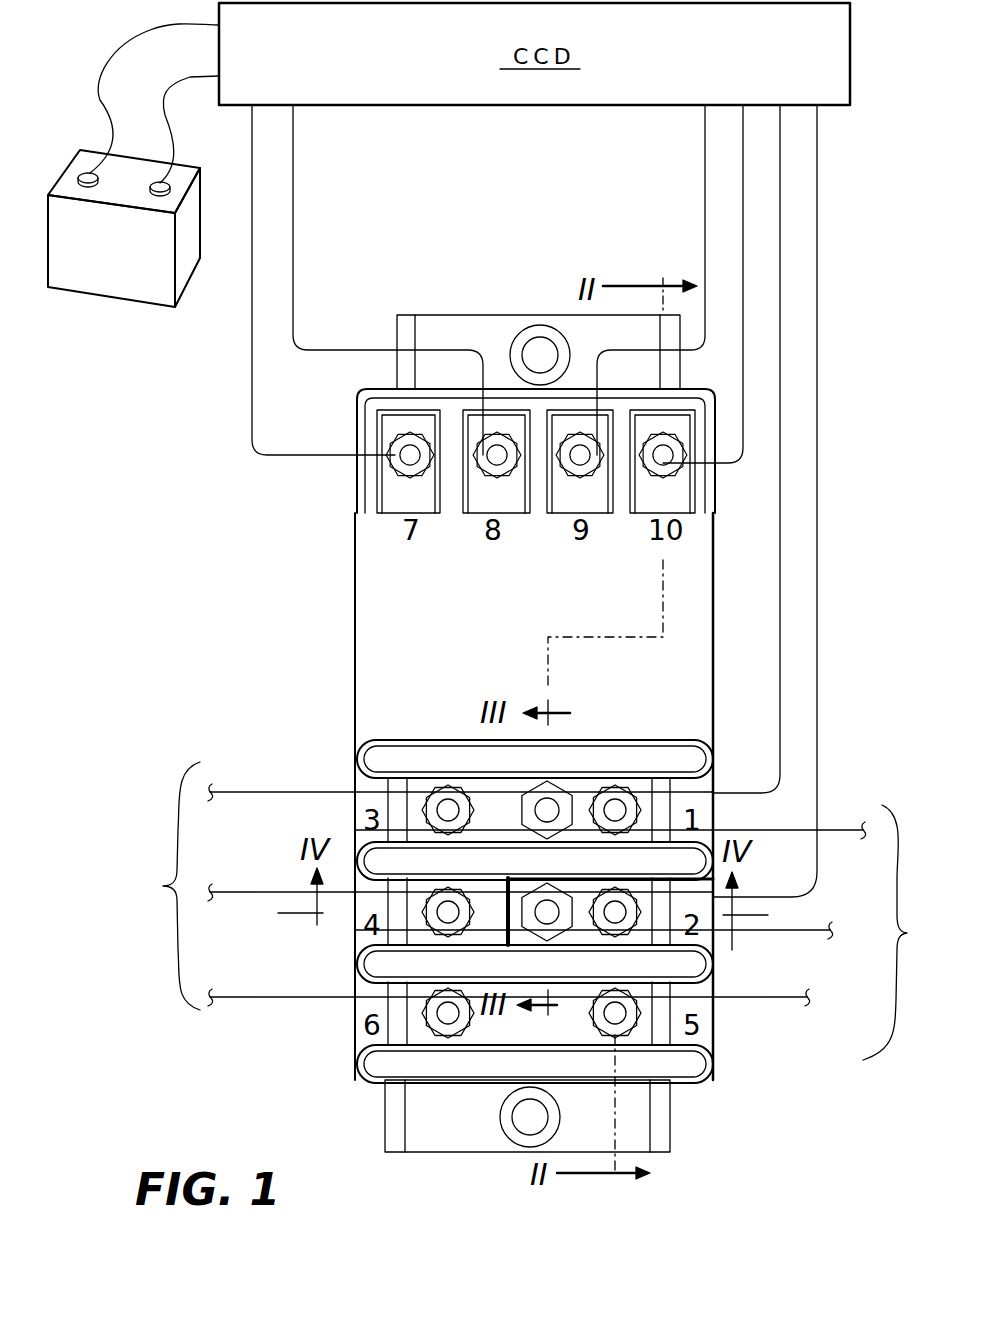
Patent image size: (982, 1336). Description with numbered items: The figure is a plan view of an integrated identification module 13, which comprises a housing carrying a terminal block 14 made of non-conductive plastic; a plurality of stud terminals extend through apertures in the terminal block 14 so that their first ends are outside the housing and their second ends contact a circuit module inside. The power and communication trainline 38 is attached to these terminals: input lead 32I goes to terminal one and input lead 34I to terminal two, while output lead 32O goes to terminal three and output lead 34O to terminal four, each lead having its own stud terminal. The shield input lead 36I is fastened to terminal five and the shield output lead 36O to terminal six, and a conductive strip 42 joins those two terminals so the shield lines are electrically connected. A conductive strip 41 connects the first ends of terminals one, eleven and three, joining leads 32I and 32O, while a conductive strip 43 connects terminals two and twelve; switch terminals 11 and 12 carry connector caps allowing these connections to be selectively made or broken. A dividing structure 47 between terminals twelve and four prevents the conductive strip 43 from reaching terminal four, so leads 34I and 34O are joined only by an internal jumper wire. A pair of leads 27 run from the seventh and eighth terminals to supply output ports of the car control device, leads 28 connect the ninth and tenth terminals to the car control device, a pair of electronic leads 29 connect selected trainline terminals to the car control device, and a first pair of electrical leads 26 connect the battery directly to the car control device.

The switch terminal 11 is at (553, 787).
The switch terminal 12 is at (590, 1013).
The integrated identification module 13 is at (390, 667).
The terminal block 14 is at (557, 930).
The electrical leads 26 is at (105, 62).
The leads 27 is at (293, 278).
The leads 28 is at (703, 268).
The electronic leads 29 is at (740, 790).
The output lead 32O is at (297, 792).
The input lead 32I is at (834, 830).
The output lead 34O is at (292, 892).
The input lead 34I is at (758, 932).
The shield output lead 36O is at (233, 997).
The shield input lead 36I is at (786, 1000).
The power and communication trainline 38 is at (526, 911).
The conductive strip 41 is at (580, 790).
The conductive strip 42 is at (487, 1030).
The conductive strip 43 is at (587, 933).
The dividing structure 47 is at (500, 890).